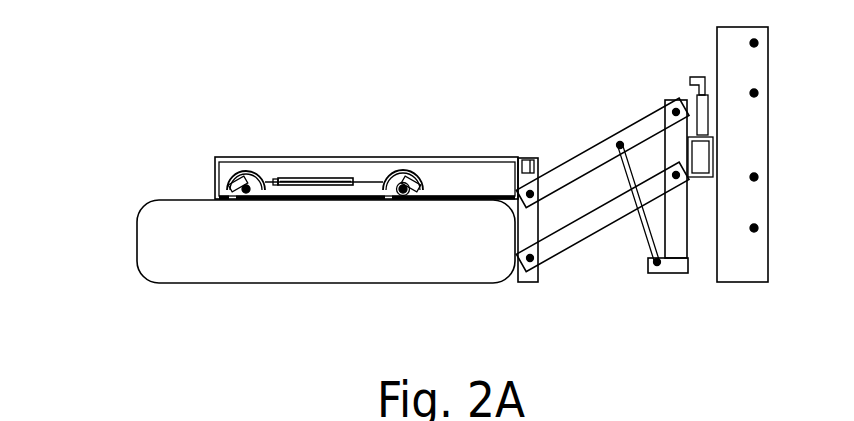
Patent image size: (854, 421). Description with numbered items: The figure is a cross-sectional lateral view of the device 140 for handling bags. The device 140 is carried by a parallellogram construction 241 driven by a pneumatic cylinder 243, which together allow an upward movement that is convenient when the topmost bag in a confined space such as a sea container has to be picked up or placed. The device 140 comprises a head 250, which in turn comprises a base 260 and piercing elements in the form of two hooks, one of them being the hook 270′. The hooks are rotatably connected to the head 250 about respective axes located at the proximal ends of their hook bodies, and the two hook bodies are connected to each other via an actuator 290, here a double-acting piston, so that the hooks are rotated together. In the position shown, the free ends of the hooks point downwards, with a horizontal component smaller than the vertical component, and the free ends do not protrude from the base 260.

The device 140 is at (127, 80).
The head 250 is at (379, 84).
The base 260 is at (295, 202).
The hook 270′ is at (261, 155).
The actuator 290 is at (318, 178).
The parallellogram construction 241 is at (581, 123).
The pneumatic cylinder 243 is at (640, 245).